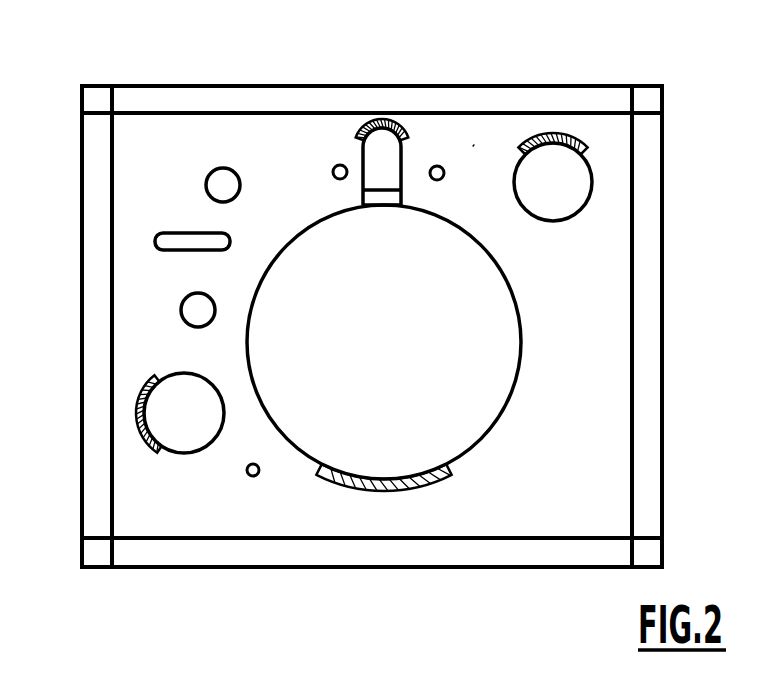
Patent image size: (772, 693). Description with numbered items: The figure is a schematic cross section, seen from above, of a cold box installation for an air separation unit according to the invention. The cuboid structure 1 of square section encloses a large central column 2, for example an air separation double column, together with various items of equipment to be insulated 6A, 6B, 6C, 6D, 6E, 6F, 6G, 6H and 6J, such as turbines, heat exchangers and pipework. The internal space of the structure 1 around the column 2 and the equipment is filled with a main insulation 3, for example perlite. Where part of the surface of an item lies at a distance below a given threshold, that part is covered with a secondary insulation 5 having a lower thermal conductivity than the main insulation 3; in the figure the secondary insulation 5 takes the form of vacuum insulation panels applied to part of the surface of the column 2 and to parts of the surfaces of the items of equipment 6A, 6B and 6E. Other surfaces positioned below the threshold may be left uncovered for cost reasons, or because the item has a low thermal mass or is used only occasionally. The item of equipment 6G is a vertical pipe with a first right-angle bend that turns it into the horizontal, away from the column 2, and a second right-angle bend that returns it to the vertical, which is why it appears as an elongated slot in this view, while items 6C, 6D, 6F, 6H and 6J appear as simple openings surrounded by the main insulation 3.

The cuboid structure 1 is at (261, 558).
The column 2 is at (472, 460).
The main insulation 3 is at (473, 145).
The secondary insulation 5 is at (380, 118).
The item of equipment to be insulated 6A is at (592, 190).
The item of equipment to be insulated 6B is at (437, 165).
The item of equipment to be insulated 6C is at (360, 155).
The item of equipment to be insulated 6D is at (247, 470).
The item of equipment to be insulated 6E is at (143, 428).
The item of equipment to be insulated 6F is at (181, 311).
The vertical pipe 6G is at (155, 249).
The item of equipment to be insulated 6H is at (206, 185).
The item of equipment to be insulated 6J is at (335, 165).